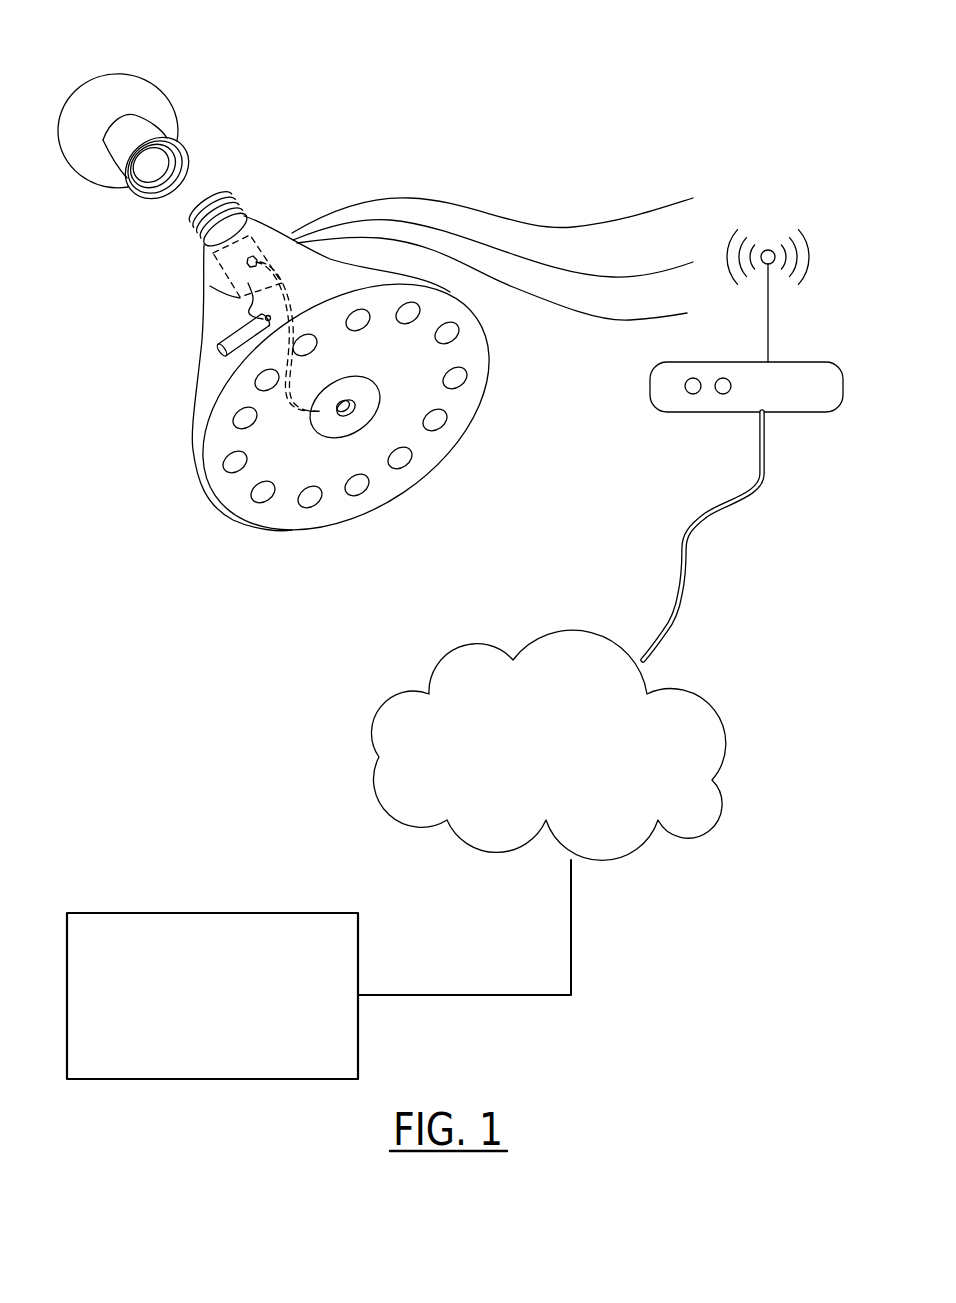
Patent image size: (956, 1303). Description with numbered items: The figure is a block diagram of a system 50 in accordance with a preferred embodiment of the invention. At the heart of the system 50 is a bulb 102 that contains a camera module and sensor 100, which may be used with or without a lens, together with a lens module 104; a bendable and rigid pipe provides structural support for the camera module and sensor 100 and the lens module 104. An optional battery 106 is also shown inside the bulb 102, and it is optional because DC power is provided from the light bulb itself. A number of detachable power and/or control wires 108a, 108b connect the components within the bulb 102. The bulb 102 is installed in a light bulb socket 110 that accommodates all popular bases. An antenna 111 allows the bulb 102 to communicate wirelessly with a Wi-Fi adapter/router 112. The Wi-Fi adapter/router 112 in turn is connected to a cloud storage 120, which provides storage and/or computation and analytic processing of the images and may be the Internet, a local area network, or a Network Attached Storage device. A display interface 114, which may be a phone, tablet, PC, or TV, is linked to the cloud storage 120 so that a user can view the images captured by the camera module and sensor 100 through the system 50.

The system 50 is at (470, 49).
The camera module and sensor 100 is at (222, 286).
The bulb 102 is at (273, 532).
The lens module 104 is at (385, 392).
The optional battery 106 is at (218, 336).
The detachable power and/or control wire 108a is at (222, 232).
The detachable power and/or control wire 108b is at (237, 217).
The light bulb socket 110 is at (163, 79).
The antenna 111 is at (270, 259).
The Wi-Fi adapter/router 112 is at (790, 362).
The display interface 114 is at (137, 913).
The cloud storage 120 is at (466, 644).